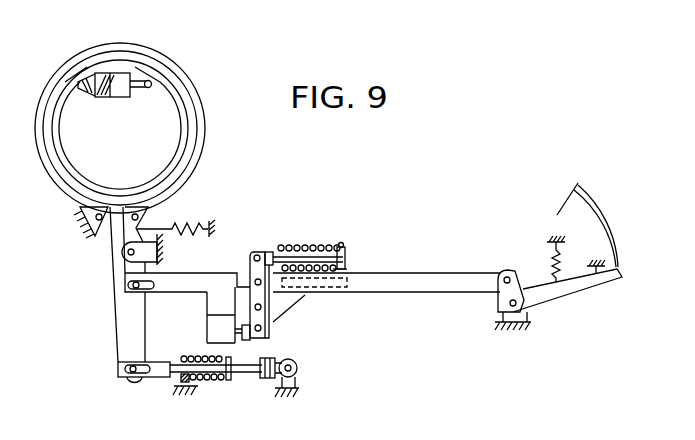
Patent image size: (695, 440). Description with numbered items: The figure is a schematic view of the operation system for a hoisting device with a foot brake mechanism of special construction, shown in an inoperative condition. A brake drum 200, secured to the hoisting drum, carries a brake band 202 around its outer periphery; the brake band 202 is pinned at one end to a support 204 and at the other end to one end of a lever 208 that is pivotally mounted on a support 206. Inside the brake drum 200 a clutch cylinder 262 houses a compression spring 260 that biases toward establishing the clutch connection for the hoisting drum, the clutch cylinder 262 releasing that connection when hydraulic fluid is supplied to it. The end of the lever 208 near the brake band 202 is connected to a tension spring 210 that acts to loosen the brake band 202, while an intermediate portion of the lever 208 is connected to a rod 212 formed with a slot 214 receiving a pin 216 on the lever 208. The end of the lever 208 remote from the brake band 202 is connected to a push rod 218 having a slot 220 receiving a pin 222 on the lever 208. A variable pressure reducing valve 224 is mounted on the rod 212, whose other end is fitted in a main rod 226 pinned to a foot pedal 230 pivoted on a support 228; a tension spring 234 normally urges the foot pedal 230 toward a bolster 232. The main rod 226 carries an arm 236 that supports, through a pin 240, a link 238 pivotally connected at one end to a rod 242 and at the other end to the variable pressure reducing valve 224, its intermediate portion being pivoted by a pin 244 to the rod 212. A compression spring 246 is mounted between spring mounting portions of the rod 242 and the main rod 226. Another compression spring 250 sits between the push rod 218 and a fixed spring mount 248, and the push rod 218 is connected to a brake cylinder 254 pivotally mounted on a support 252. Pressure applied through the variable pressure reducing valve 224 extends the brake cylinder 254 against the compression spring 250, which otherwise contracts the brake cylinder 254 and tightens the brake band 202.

The brake drum 200 is at (92, 63).
The brake band 202 is at (167, 57).
The support 204 is at (79, 213).
The support 206 is at (122, 258).
The lever 208 is at (118, 313).
The tension spring 210 is at (176, 218).
The rod 212 is at (188, 283).
The slot 214 is at (176, 327).
The pin 216 is at (126, 288).
The push rod 218 is at (163, 384).
The slot 220 is at (132, 382).
The pin 222 is at (123, 363).
The variable pressure reducing valve 224 is at (208, 335).
The main rod 226 is at (440, 285).
The support 228 is at (501, 316).
The foot pedal 230 is at (568, 295).
The bolster 232 is at (613, 267).
The tension spring 234 is at (547, 261).
The arm 236 is at (306, 298).
The link 238 is at (262, 255).
The pin 240 is at (276, 325).
The rod 242 is at (347, 251).
The pin 244 is at (252, 267).
The compression spring 246 is at (322, 244).
The fixed spring mount 248 is at (224, 381).
The compression spring 250 is at (273, 383).
The support 252 is at (298, 372).
The brake cylinder 254 is at (285, 362).
The compression spring 260 is at (90, 98).
The clutch cylinder 262 is at (117, 76).